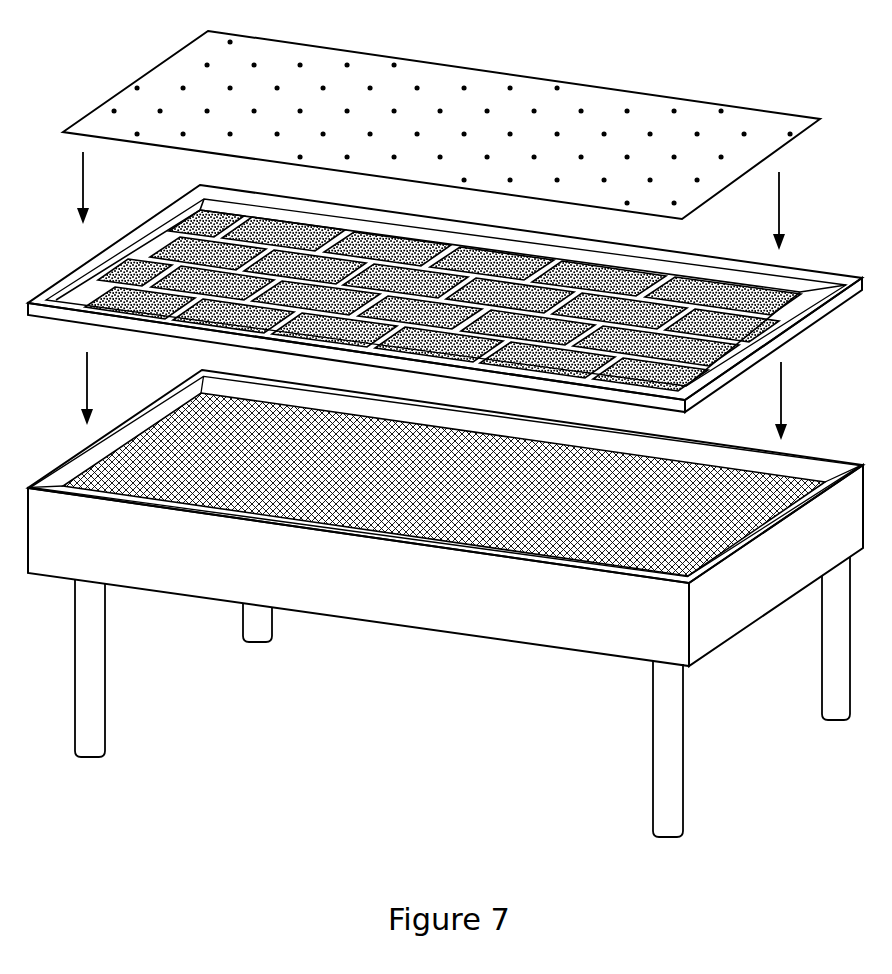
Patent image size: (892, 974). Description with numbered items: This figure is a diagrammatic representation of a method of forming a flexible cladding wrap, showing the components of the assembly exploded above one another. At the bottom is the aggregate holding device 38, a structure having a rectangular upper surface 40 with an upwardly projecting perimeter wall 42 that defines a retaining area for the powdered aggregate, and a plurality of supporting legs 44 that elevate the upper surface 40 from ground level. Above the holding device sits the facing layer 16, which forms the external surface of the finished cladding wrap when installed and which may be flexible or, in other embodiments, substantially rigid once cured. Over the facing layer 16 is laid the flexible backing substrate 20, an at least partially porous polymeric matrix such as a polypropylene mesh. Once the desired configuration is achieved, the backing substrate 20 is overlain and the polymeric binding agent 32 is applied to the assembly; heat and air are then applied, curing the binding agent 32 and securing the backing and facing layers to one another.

The polymeric binding agent 32 is at (172, 69).
The facing layer 16 is at (101, 271).
The flexible backing substrate 20 is at (432, 544).
The aggregate holding device 38 is at (436, 603).
The upper surface 40 is at (633, 555).
The perimeter wall 42 is at (503, 575).
The supporting legs 44 is at (102, 682).